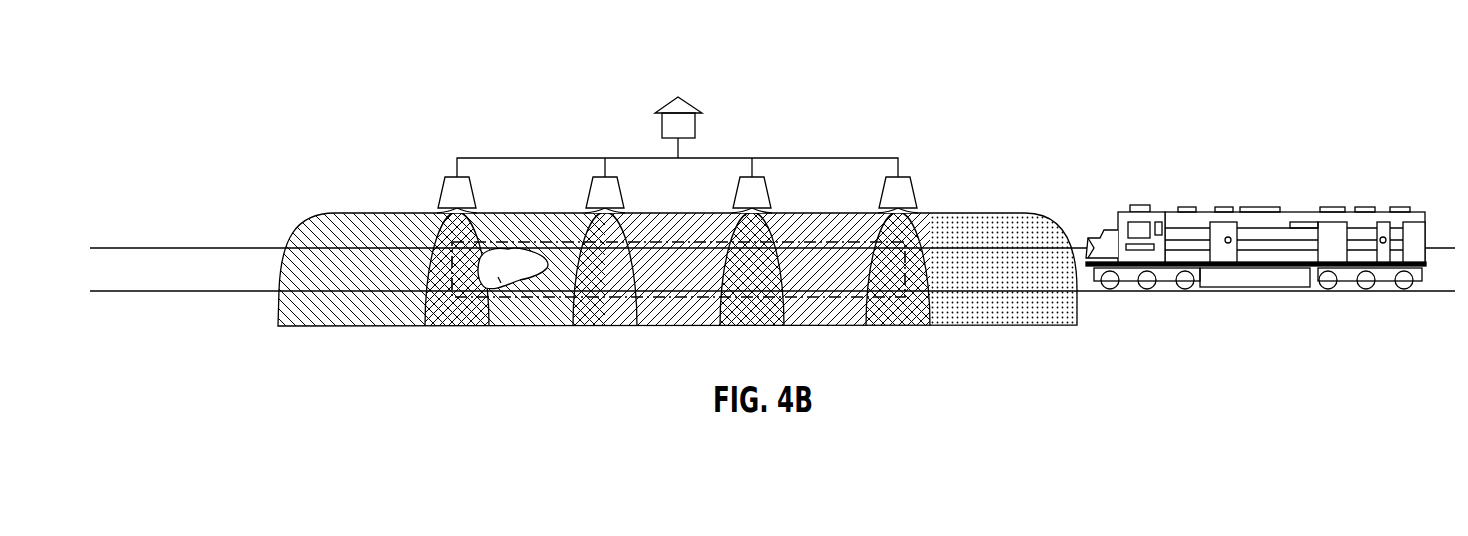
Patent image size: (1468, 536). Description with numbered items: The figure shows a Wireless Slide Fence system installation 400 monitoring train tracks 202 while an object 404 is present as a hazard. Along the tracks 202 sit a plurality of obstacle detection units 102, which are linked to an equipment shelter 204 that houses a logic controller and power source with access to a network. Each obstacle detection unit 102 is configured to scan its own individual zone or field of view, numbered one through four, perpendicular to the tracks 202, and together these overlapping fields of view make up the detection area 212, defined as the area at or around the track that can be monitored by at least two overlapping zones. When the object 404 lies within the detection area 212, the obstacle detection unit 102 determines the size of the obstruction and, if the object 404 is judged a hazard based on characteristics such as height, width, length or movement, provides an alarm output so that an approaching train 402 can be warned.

The Wireless Slide Fence system installation 400 is at (160, 50).
The train tracks 202 is at (176, 243).
The obstacle detection units 102 is at (477, 189).
The equipment shelter 204 is at (692, 108).
The detection area 212 is at (872, 298).
The object 404 is at (500, 276).
The train 402 is at (1252, 205).